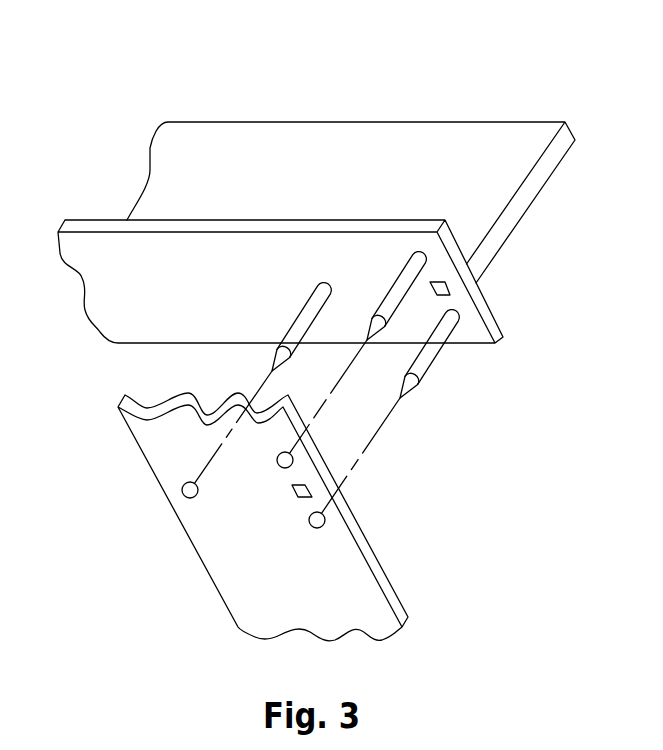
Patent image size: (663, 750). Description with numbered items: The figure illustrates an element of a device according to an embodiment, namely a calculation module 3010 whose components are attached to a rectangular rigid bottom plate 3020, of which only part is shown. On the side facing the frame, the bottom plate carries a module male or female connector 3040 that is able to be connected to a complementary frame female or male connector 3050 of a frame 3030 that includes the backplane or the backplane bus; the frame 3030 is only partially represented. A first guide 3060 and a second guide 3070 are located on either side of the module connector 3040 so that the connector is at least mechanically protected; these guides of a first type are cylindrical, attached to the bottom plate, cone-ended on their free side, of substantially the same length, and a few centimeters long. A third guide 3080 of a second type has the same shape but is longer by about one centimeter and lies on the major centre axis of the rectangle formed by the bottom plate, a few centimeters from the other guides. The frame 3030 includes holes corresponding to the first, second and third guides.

The calculation module 3010 is at (492, 162).
The bottom plate 3020 is at (503, 337).
The frame 3030 is at (395, 588).
The module connector 3040 is at (448, 288).
The frame connector 3050 is at (312, 492).
The first guide 3060 is at (402, 287).
The second guide 3070 is at (437, 360).
The third guide 3080 is at (295, 330).